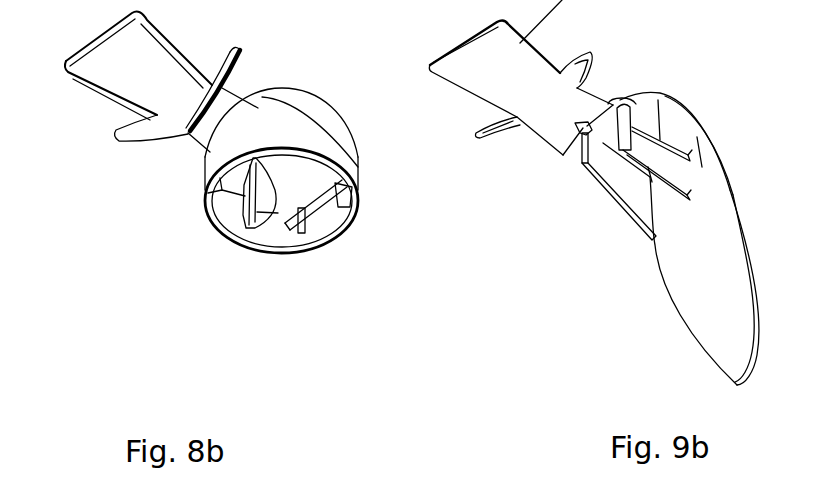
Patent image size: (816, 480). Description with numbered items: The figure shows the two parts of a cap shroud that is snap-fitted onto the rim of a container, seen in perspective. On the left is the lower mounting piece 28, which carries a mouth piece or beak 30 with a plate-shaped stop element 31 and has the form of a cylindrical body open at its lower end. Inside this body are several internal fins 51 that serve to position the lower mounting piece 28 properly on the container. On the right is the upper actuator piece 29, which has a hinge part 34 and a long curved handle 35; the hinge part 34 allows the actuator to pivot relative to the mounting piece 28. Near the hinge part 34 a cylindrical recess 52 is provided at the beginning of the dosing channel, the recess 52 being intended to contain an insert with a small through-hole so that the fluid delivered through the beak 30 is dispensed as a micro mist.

In FIG. 8B, the lower mounting piece 28 is at (337, 150).
In FIG. 9B, the upper actuator piece 29 is at (670, 102).
In FIG. 8B, the beak 30 is at (110, 75).
In FIG. 8B, the plate-shaped stop element 31 is at (152, 128).
In FIG. 9B, the hinge part 34 is at (611, 100).
In FIG. 9B, the handle 35 is at (700, 282).
In FIG. 8B, the internal fins 51 is at (240, 217).
In FIG. 9B, the cylindrical recess 52 is at (583, 128).